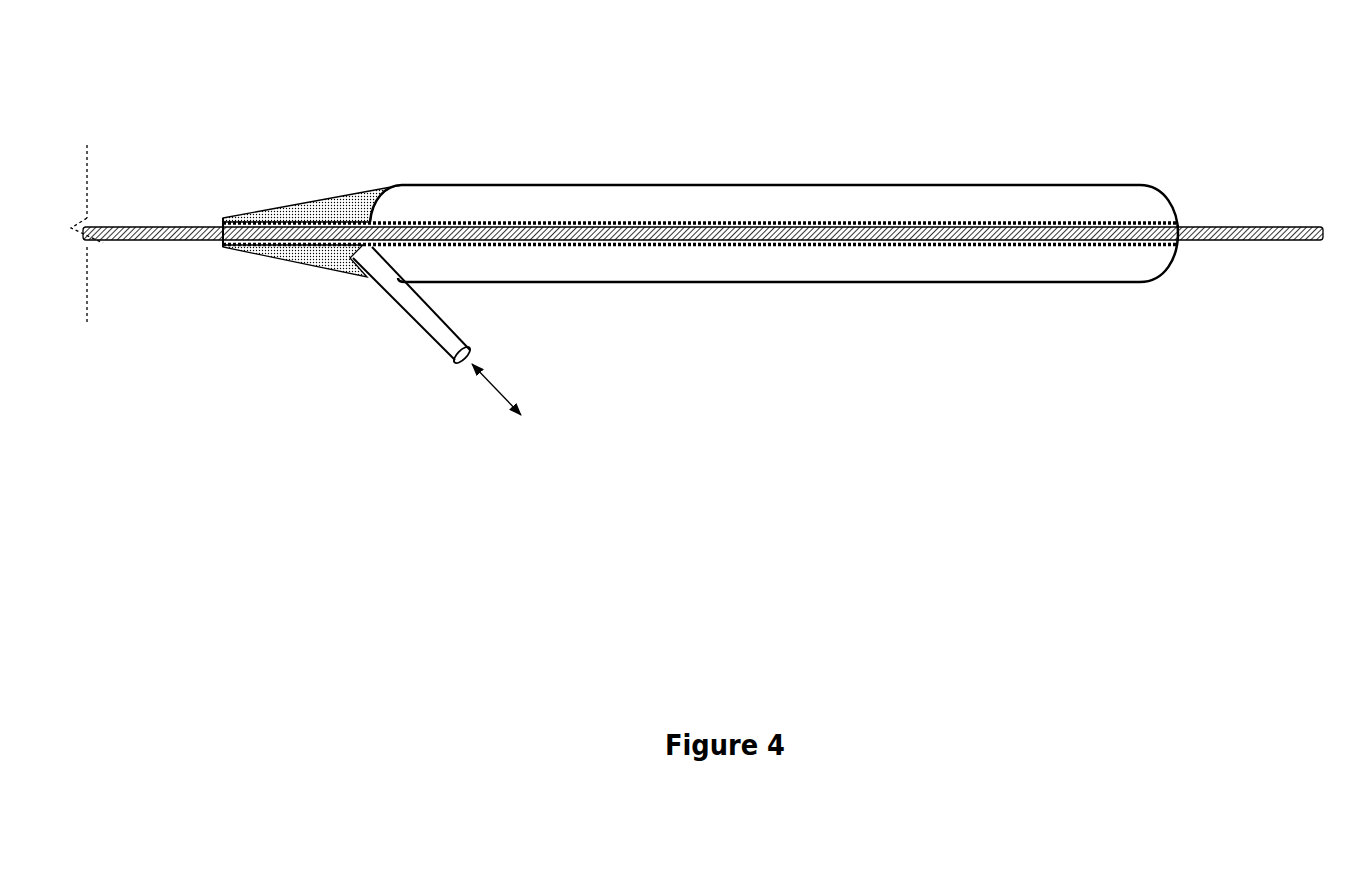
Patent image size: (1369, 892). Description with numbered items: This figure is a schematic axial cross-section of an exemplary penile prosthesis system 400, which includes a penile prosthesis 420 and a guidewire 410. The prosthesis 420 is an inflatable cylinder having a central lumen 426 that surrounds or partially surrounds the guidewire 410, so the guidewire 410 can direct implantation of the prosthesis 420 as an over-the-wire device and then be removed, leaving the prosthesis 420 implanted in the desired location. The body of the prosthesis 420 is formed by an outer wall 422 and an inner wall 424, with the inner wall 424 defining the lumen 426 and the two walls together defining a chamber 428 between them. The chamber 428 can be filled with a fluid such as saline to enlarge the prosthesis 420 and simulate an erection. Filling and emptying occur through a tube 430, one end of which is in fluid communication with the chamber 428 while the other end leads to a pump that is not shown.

The penile prosthesis system 400 is at (993, 66).
The guidewire 410 is at (1227, 239).
The penile prosthesis 420 is at (637, 158).
The outer wall 422 is at (792, 185).
The inner wall 424 is at (863, 223).
The central lumen 426 is at (1187, 223).
The chamber 428 is at (775, 214).
The tube 430 is at (428, 335).